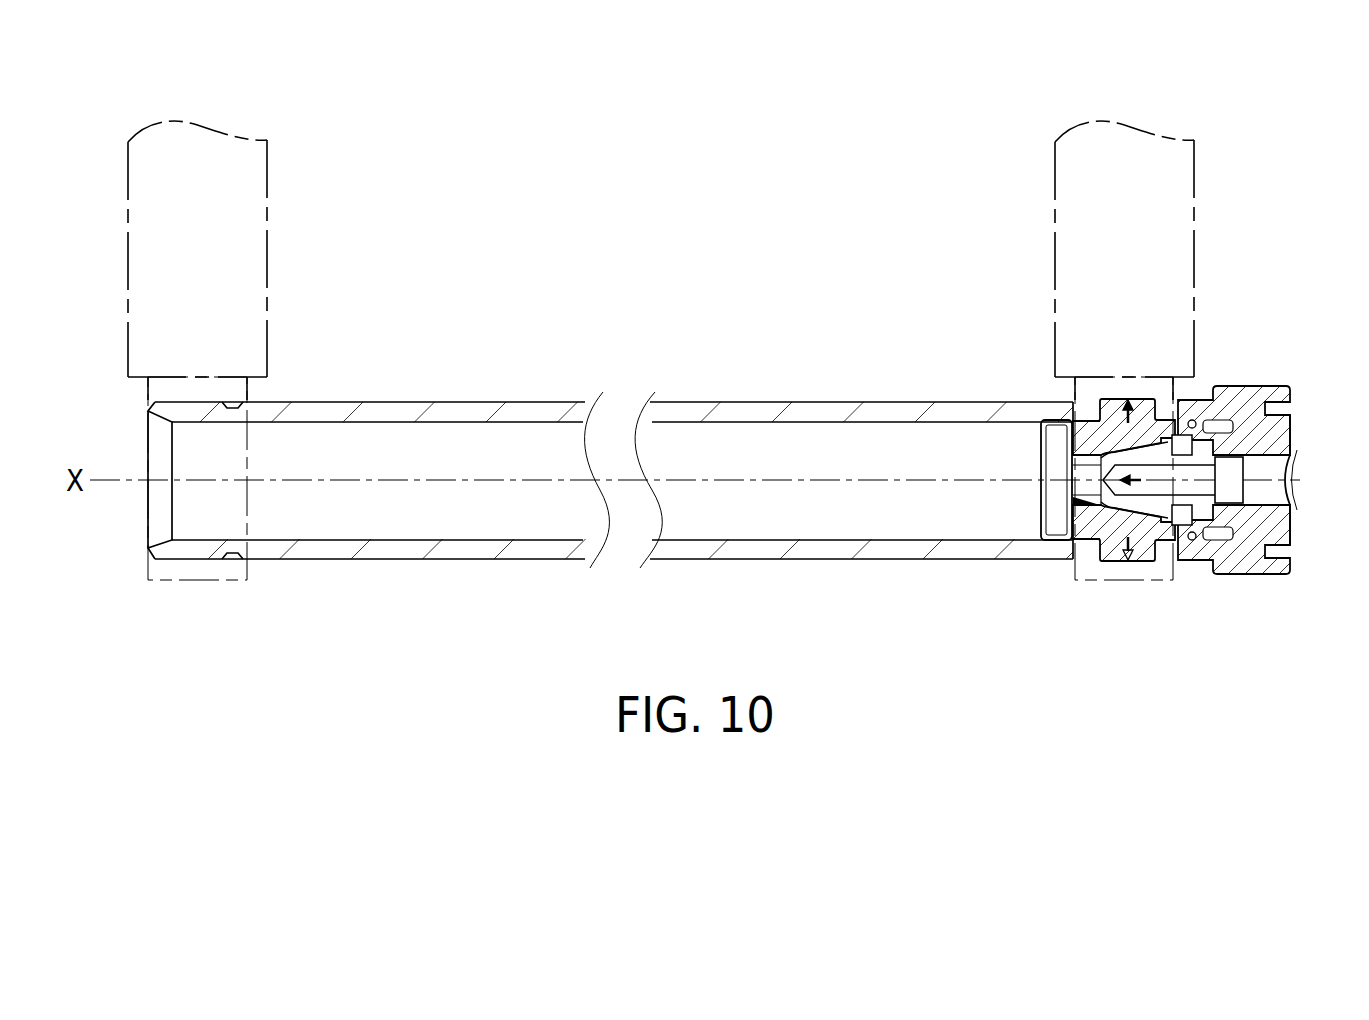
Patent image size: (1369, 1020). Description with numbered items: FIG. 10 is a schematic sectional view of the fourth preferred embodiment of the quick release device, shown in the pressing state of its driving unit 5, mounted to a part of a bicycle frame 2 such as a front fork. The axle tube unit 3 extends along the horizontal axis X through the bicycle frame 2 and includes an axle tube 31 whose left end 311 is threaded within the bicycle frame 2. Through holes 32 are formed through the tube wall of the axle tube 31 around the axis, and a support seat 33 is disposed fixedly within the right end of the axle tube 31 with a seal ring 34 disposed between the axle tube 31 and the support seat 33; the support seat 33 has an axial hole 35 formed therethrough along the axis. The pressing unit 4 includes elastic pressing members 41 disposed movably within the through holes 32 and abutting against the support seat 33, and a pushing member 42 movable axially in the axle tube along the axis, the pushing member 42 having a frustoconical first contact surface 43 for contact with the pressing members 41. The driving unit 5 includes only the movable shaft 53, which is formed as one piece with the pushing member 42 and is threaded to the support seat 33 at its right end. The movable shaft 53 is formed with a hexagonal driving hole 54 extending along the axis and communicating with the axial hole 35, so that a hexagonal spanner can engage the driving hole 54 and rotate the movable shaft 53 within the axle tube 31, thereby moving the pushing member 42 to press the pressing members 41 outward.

The bicycle frame 2 is at (1045, 253).
The axle tube unit 3 is at (610, 532).
The left end 311 is at (190, 555).
The pressing unit 4 is at (1110, 484).
The pushing member 42 is at (1080, 498).
The pressing members 41 is at (1072, 436).
The through holes 32 is at (1073, 412).
The first contact surface 43 is at (1062, 452).
The driving unit 5 is at (1179, 399).
The movable shaft 53 is at (1186, 511).
The axle tube 31 is at (1257, 578).
The support seat 33 is at (1283, 523).
The seal ring 34 is at (1194, 420).
The axial hole 35 is at (1287, 470).
The driving hole 54 is at (1198, 472).